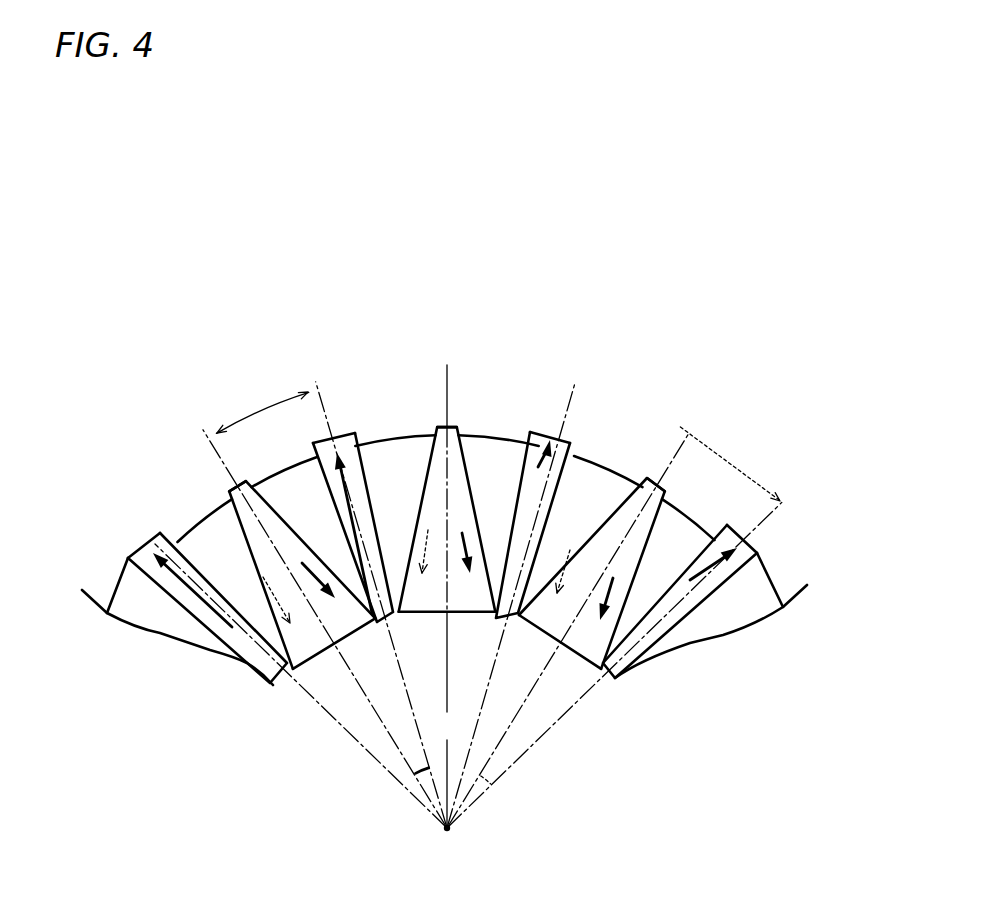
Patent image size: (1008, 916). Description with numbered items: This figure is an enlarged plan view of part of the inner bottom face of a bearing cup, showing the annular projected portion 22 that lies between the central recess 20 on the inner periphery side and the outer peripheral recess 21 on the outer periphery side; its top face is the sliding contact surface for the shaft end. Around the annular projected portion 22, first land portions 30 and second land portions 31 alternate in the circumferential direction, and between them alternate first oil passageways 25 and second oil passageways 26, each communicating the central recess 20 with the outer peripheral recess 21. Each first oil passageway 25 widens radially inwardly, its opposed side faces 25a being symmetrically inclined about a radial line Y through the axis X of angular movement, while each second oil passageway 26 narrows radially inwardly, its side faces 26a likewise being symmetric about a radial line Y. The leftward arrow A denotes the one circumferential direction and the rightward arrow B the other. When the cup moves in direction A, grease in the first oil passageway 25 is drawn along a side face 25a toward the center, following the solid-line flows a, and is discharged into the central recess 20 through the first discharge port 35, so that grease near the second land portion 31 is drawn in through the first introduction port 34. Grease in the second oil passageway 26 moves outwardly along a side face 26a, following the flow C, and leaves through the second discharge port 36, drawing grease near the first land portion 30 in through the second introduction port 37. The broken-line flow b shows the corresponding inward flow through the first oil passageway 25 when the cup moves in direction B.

The central recess 20 is at (555, 745).
The outer peripheral recess 21 is at (428, 325).
The annular projected portion 22 is at (712, 644).
The first oil passageway 25 is at (237, 527).
The side face of first oil passageway 25a is at (426, 484).
The second oil passageway 26 is at (126, 558).
The side face of second oil passageway 26a is at (338, 510).
The first land portion 30 is at (287, 490).
The second land portion 31 is at (187, 540).
The first introduction port 34 is at (224, 478).
The first discharge port 35 is at (322, 652).
The second discharge port 36 is at (146, 546).
The second introduction port 37 is at (279, 684).
The axis of angular movement X is at (447, 829).
The radial line Y is at (380, 720).
The one circumferential direction A is at (262, 409).
The other circumferential direction B is at (730, 464).
The grease flow in second oil passageway C is at (183, 577).
The grease flow in first oil passageway a is at (302, 567).
The grease flow during reverse movement b is at (405, 572).